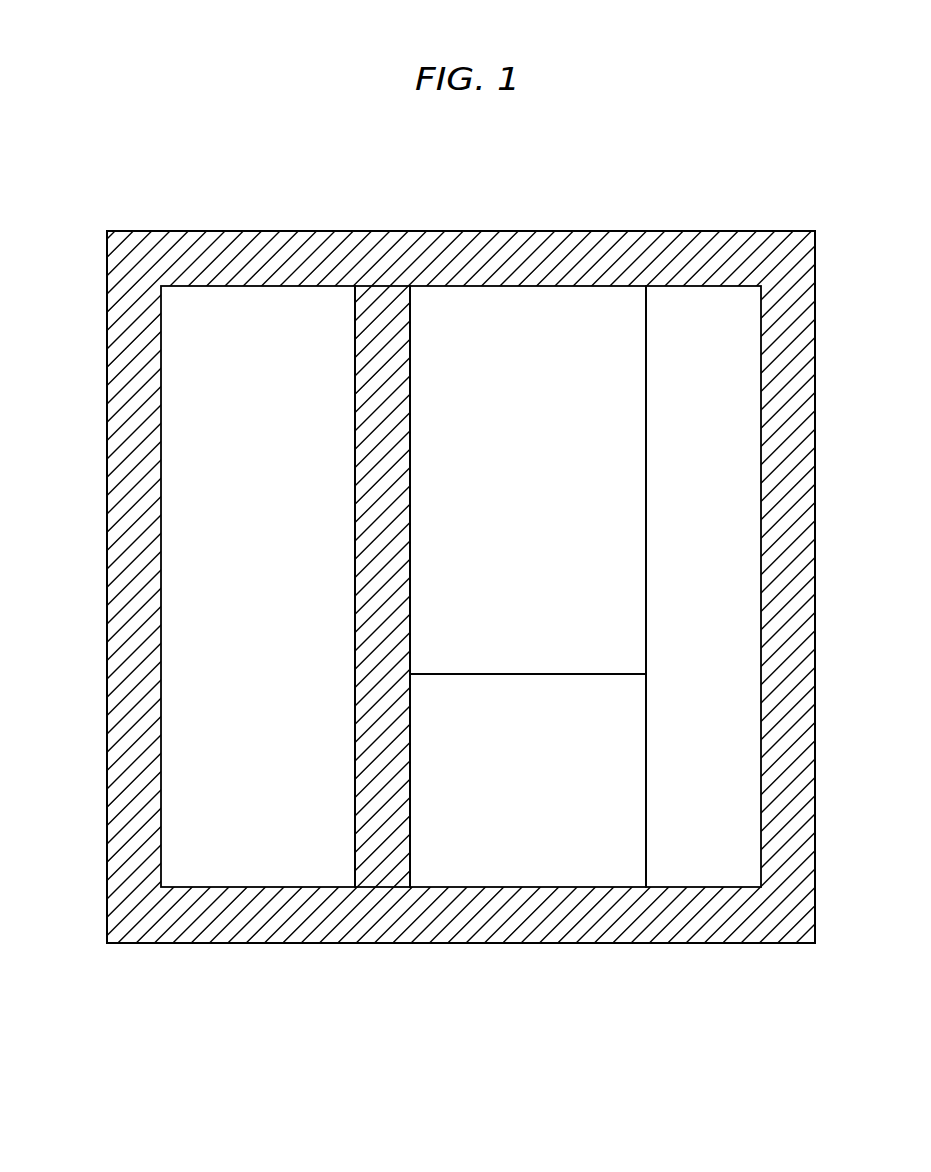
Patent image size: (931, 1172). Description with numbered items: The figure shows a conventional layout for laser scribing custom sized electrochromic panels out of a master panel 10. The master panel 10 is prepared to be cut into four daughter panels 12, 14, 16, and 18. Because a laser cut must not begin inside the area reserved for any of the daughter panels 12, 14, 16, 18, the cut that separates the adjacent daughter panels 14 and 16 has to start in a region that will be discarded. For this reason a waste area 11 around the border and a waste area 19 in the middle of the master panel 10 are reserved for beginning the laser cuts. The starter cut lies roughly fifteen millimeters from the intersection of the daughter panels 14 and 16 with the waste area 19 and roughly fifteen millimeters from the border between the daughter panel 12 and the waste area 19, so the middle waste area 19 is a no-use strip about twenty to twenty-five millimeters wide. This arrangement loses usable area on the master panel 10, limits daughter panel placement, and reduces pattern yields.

The master panel 10 is at (467, 1043).
The waste area 11 is at (157, 908).
The daughter panel 12 is at (200, 362).
The daughter panel 14 is at (519, 318).
The daughter panel 16 is at (532, 852).
The daughter panel 18 is at (680, 318).
The waste area 19 is at (386, 852).